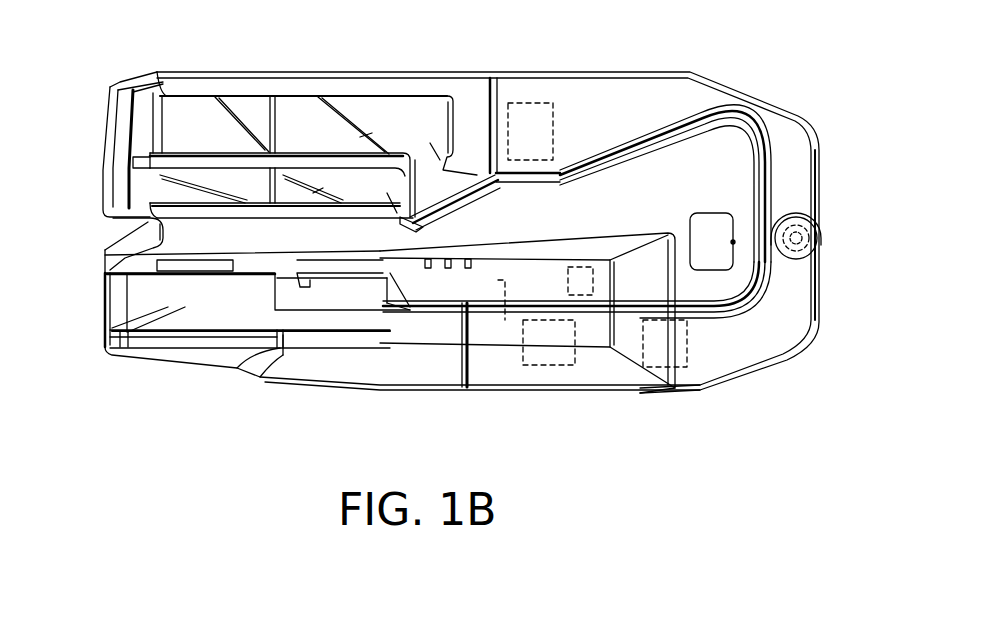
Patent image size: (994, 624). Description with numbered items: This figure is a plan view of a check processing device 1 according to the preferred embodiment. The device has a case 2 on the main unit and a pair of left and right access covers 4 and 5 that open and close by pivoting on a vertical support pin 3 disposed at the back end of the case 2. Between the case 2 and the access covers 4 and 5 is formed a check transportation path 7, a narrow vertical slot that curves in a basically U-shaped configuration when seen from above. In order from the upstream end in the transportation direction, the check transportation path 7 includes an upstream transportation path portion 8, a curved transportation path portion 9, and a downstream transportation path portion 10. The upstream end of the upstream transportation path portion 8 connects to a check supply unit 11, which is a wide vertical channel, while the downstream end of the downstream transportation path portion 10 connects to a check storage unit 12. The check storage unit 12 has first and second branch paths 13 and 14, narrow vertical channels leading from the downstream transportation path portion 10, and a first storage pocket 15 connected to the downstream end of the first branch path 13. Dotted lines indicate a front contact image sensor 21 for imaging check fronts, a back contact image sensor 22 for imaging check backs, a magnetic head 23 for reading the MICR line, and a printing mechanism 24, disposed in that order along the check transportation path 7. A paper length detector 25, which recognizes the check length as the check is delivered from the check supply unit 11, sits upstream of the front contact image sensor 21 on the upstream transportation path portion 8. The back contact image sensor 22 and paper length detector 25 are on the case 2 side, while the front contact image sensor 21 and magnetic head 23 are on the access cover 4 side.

The check processing device 1 is at (97, 258).
The case 2 is at (362, 388).
The vertical support pin 3 is at (793, 247).
The access cover 4 is at (608, 368).
The access cover 5 is at (585, 120).
The check transportation path 7 is at (707, 314).
The upstream transportation path portion 8 is at (442, 314).
The curved transportation path portion 9 is at (206, 290).
The downstream transportation path portion 10 is at (272, 93).
The check supply unit 11 is at (487, 172).
The check storage unit 12 is at (440, 211).
The first branch path 13 is at (307, 127).
The second branch path 14 is at (195, 165).
The first storage pocket 15 is at (197, 192).
The front contact image sensor 21 is at (550, 365).
The back contact image sensor 22 is at (590, 295).
The magnetic head 23 is at (680, 352).
The printing mechanism 24 is at (543, 103).
The paper length detector 25 is at (505, 320).